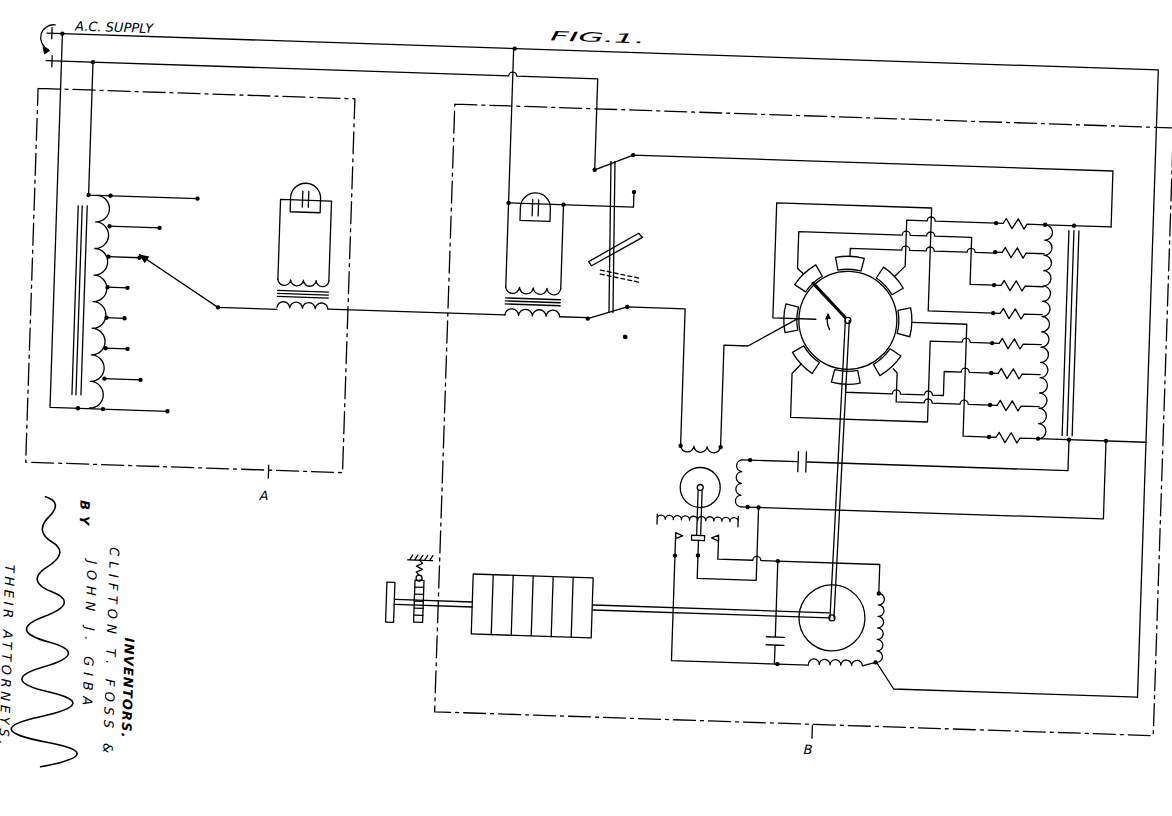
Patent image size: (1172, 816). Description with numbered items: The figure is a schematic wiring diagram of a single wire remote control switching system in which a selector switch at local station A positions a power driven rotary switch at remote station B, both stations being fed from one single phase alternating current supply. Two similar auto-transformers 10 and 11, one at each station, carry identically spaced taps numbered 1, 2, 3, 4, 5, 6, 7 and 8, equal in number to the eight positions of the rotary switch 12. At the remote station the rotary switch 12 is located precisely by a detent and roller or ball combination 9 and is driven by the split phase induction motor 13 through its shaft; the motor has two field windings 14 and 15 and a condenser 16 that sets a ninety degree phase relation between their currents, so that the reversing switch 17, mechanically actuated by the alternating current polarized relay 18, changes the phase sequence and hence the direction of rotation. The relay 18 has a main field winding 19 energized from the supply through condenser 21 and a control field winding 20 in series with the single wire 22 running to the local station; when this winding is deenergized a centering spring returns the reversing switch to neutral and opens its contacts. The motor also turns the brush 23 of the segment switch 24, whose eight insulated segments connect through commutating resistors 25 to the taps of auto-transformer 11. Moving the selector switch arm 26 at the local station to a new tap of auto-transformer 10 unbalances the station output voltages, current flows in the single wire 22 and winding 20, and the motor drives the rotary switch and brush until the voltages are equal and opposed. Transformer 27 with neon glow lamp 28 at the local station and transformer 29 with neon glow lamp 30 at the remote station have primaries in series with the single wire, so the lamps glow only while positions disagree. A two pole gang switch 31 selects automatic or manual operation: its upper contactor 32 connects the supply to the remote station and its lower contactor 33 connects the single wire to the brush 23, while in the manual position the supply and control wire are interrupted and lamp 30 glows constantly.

The tap 1 is at (576, 237).
The tap 2 is at (576, 243).
The tap 3 is at (575, 268).
The tap 4 is at (574, 302).
The tap 5 is at (572, 336).
The tap 6 is at (572, 361).
The tap 7 is at (571, 370).
The tap 8 is at (601, 369).
The detent and roller or ball combination 9 is at (447, 562).
The auto-transformer 10 is at (118, 189).
The auto-transformer 11 is at (1088, 256).
The rotary switch 12 is at (492, 612).
The split phase induction motor 13 is at (866, 558).
The field winding 14 is at (914, 602).
The field winding 15 is at (852, 646).
The condenser 16 is at (786, 616).
The reversing switch 17 is at (690, 515).
The alternating current polarized relay 18 is at (693, 465).
The main field winding 19 is at (768, 462).
The control field winding 20 is at (714, 417).
The condenser 21 is at (815, 430).
The single wire 22 is at (496, 302).
The brush or contactor 23 is at (845, 264).
The switch 24 is at (800, 335).
The commutating resistor 25 is at (1031, 185).
The selector switch arm or brush 26 is at (202, 282).
The transformer 27 is at (340, 283).
The neon glow lamp 28 is at (314, 173).
The transformer 29 is at (510, 281).
The neon glow lamp 30 is at (546, 175).
The two pole gang switch 31 is at (608, 247).
The upper contactor 32 is at (620, 132).
The lower contactor 33 is at (617, 305).